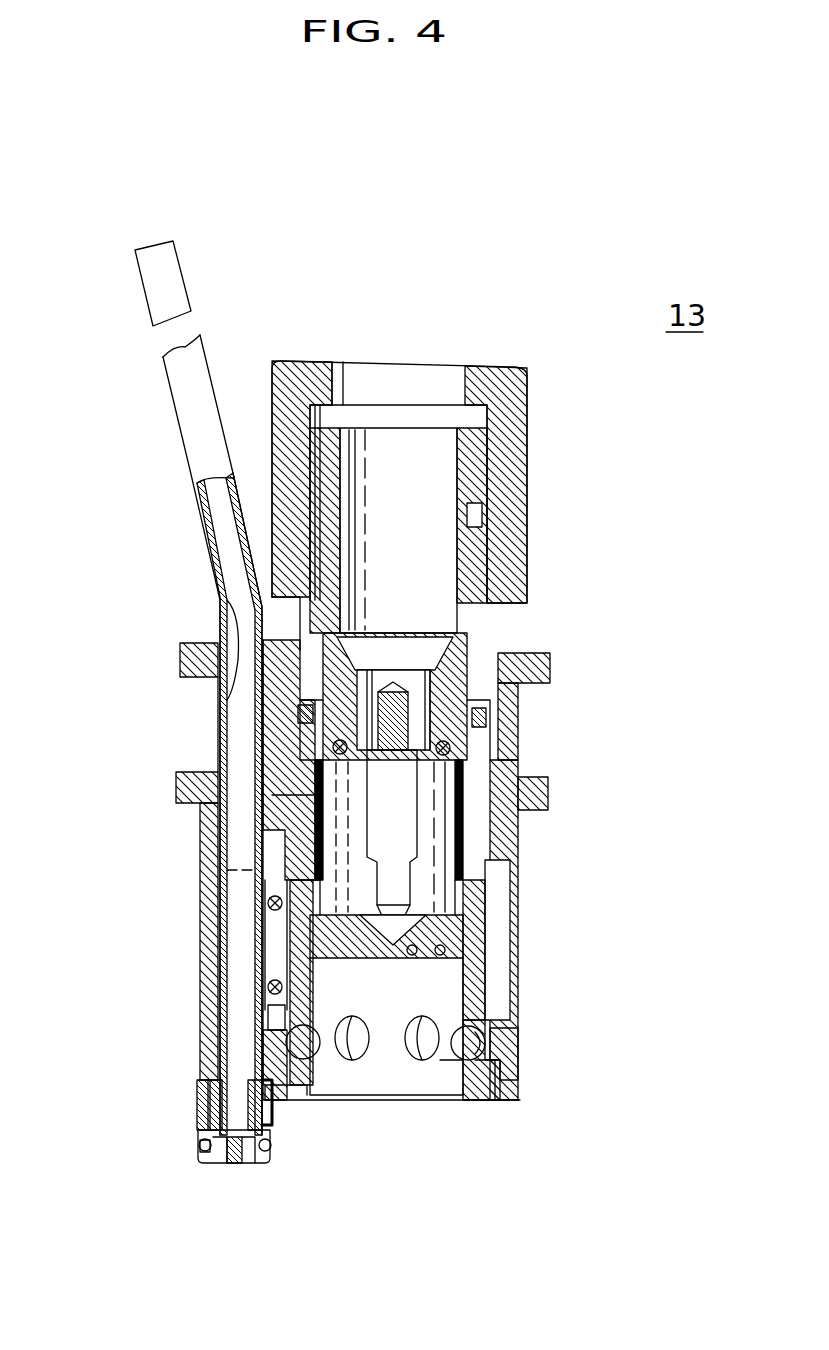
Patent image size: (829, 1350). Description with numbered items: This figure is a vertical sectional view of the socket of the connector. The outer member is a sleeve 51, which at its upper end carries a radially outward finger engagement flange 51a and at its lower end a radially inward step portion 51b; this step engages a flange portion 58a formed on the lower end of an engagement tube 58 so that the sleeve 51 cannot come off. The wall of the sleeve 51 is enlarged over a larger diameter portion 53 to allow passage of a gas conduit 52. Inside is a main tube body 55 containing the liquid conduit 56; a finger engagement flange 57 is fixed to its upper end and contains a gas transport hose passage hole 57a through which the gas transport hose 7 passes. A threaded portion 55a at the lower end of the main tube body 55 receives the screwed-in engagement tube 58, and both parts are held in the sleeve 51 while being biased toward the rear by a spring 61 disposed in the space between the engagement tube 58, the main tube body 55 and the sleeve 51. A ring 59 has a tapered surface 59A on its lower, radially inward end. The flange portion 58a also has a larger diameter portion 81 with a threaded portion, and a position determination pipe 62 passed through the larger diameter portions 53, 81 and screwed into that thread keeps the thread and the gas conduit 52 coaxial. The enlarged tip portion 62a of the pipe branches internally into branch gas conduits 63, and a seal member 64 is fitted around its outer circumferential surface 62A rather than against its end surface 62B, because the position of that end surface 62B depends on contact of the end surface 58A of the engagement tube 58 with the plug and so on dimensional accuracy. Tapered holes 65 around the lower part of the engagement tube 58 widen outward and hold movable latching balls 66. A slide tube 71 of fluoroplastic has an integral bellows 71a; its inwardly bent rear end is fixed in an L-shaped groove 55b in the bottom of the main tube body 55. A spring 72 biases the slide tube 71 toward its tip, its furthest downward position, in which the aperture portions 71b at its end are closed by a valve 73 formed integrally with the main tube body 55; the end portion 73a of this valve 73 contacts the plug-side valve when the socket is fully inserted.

The gas transport hose 7 is at (178, 402).
The sleeve 51 is at (522, 840).
The finger engagement flange 51a is at (550, 790).
The step portion 51b is at (462, 1100).
The gas conduit 52 is at (245, 780).
The larger diameter portion 53 is at (290, 930).
The main tube body 55 is at (500, 735).
The threaded portion 55a is at (468, 885).
The groove 55b is at (362, 633).
The liquid conduit 56 is at (465, 865).
The flange 57 is at (535, 658).
The gas transport hose passage hole 57a is at (230, 630).
The engagement tube 58 is at (505, 968).
The flange portion 58a is at (505, 1085).
The end surface 58A is at (510, 1105).
The ring 59 is at (488, 1043).
The tapered surface 59A is at (475, 1105).
The spring 61 is at (508, 910).
The position determination pipe 62 is at (207, 1178).
The enlarged tip portion 62a is at (255, 1150).
The outer circumferential surface 62A is at (268, 1140).
The end surface 62B is at (232, 1170).
The branch gas conduits 63 is at (235, 1047).
The seal member 64 is at (205, 1150).
The tapered holes 65 is at (370, 1055).
The latching balls 66 is at (310, 1060).
The slide tube 71 is at (500, 628).
The bellows 71a is at (320, 905).
The aperture portions 71b is at (426, 958).
The spring 72 is at (275, 1010).
The valve 73 is at (392, 780).
The end portion 73a is at (380, 955).
The larger diameter portion 81 is at (198, 1100).